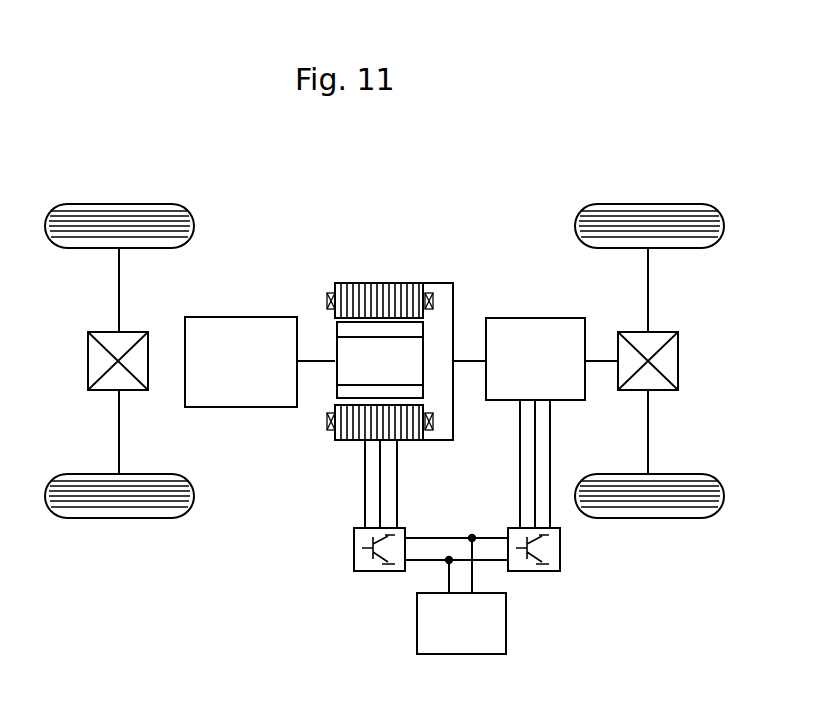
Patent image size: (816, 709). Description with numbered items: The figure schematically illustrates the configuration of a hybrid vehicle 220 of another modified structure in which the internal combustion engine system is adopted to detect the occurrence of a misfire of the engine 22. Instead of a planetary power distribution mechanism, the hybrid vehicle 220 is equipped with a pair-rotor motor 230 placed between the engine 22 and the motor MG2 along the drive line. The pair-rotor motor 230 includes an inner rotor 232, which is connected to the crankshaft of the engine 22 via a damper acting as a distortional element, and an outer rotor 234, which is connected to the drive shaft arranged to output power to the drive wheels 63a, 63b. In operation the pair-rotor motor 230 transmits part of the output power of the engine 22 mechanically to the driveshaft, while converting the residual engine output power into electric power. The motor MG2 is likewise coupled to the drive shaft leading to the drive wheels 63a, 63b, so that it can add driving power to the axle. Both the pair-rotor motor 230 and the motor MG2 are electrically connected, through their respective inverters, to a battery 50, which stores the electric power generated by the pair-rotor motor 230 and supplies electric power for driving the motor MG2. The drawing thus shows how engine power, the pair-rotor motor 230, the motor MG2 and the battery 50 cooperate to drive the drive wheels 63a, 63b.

The engine 22 is at (240, 407).
The hybrid vehicle 220 is at (457, 289).
The pair-rotor motor 230 is at (375, 309).
The inner rotor 232 is at (336, 345).
The outer rotor 234 is at (380, 283).
The motor MG2 is at (533, 318).
The battery 50 is at (506, 620).
The drive wheel 63a is at (648, 204).
The drive wheel 63b is at (648, 518).